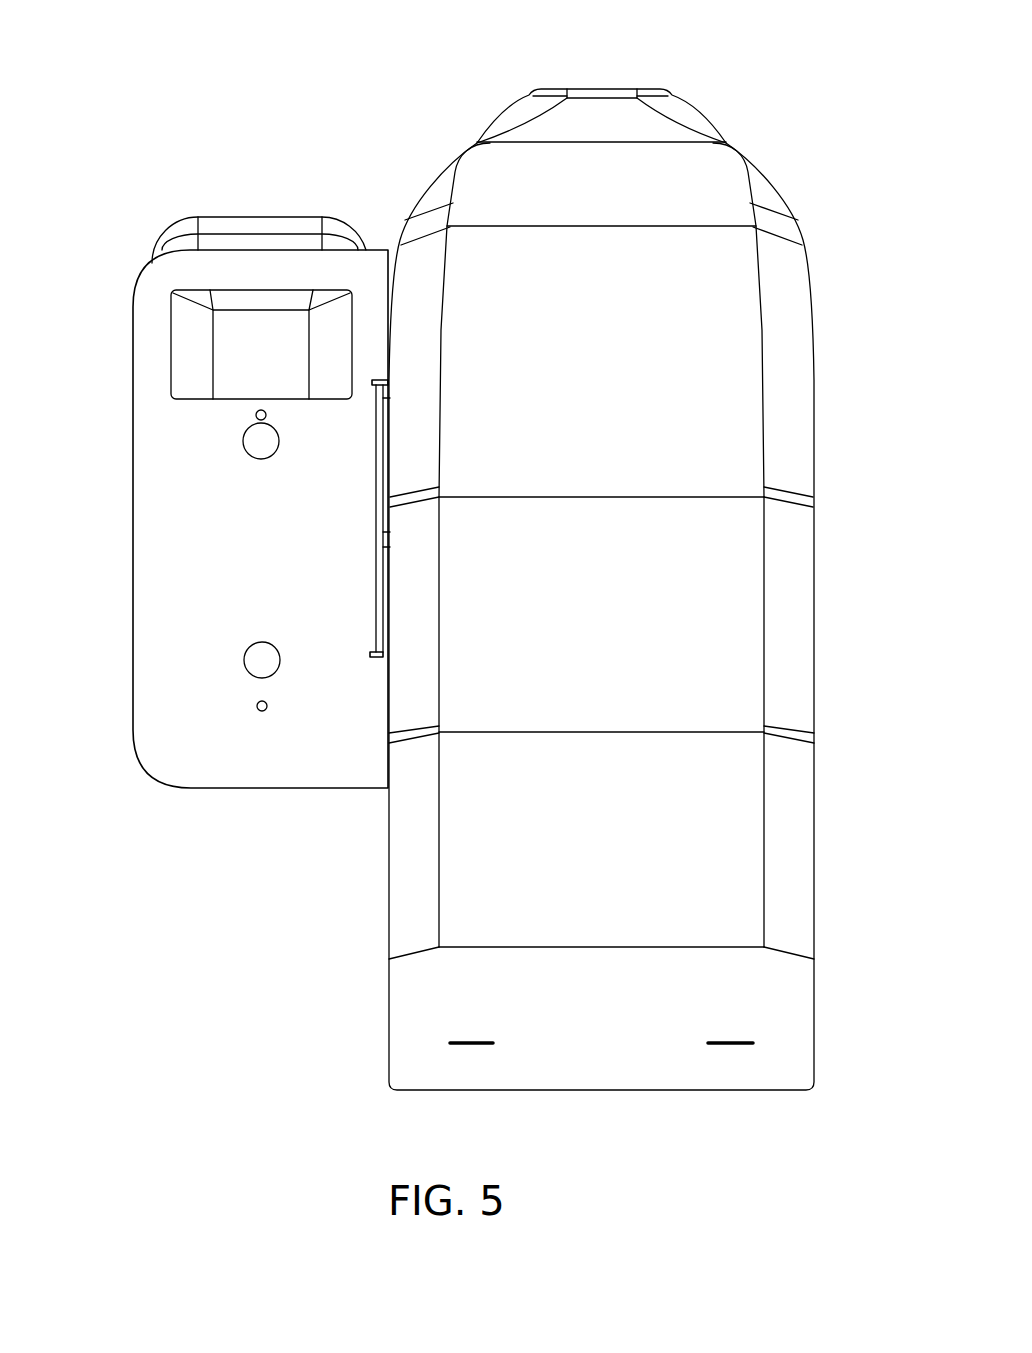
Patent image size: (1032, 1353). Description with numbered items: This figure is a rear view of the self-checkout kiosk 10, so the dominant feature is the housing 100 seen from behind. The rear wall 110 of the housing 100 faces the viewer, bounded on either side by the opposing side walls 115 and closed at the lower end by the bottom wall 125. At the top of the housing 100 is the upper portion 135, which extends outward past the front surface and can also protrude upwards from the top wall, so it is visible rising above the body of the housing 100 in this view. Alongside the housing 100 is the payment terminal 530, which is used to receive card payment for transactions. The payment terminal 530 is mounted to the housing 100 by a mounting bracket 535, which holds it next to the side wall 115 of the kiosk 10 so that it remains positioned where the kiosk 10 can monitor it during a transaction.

The self-checkout kiosk 10 is at (334, 58).
The housing 100 is at (797, 176).
The rear wall 110 is at (735, 375).
The opposing side walls 115 is at (815, 850).
The bottom wall 125 is at (442, 1019).
The upper portion 135 is at (600, 75).
The payment terminal 530 is at (255, 225).
The mounting bracket 535 is at (162, 525).